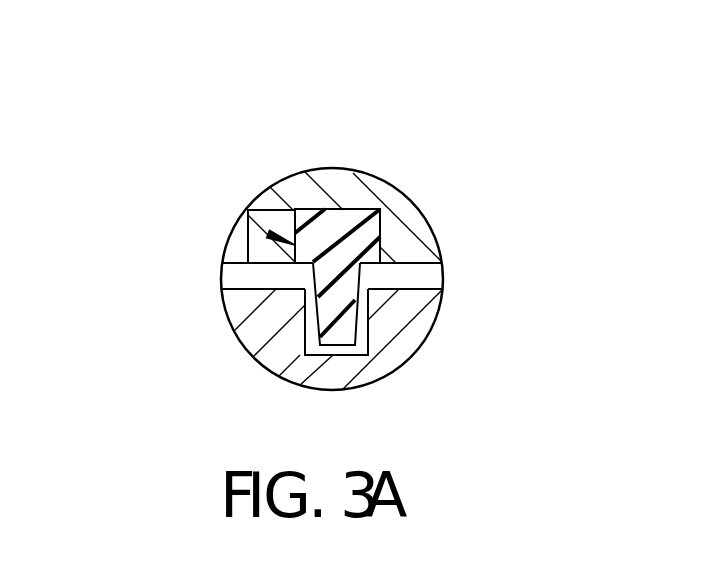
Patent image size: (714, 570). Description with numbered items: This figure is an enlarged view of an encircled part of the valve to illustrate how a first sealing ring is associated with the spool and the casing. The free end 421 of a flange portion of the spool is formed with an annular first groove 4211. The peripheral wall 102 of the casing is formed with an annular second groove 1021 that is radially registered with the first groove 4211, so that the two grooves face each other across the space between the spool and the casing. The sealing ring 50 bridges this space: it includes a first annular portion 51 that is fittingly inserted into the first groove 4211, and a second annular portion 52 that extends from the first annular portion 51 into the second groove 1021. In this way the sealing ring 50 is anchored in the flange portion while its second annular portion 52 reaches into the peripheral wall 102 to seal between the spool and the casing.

The peripheral wall 102 is at (408, 345).
The annular second groove 1021 is at (308, 351).
The free end of flange portion 421 is at (330, 178).
The annular first groove 4211 is at (352, 209).
The sealing ring 50 is at (268, 234).
The first annular portion 51 is at (335, 253).
The second annular portion 52 is at (317, 317).